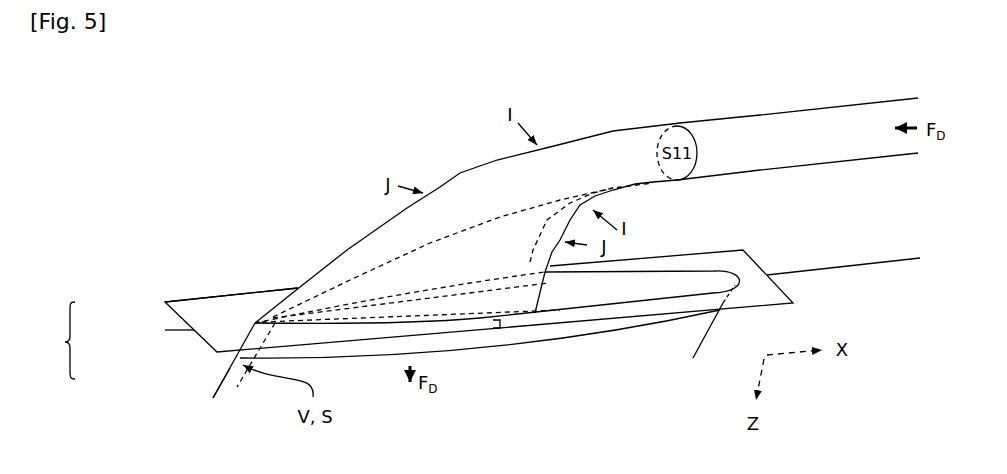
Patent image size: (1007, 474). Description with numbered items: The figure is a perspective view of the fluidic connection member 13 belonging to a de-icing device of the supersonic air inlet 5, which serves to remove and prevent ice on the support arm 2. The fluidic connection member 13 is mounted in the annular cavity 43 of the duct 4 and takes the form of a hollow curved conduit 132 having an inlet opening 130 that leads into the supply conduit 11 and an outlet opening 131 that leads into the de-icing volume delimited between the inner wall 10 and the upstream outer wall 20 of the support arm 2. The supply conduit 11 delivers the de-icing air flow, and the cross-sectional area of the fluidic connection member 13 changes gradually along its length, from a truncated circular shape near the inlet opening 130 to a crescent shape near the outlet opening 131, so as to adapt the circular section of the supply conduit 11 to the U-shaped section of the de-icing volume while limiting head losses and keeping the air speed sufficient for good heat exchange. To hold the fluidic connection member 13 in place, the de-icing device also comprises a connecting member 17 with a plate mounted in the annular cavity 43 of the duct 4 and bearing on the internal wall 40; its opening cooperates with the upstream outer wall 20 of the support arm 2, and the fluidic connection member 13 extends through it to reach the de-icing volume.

The support arm 2 is at (410, 359).
The duct 4 is at (437, 289).
The supersonic air inlet 5 is at (59, 340).
The inner wall 10 is at (233, 392).
The supply conduit 11 is at (805, 110).
The fluidic connection member 13 is at (466, 206).
The connecting member 17 is at (242, 288).
The upstream outer wall 20 is at (215, 398).
The internal wall 40 is at (910, 258).
The annular cavity 43 is at (848, 228).
The inlet opening 130 is at (677, 125).
The outlet opening 131 is at (498, 325).
The hollow curved conduit 132 is at (347, 250).